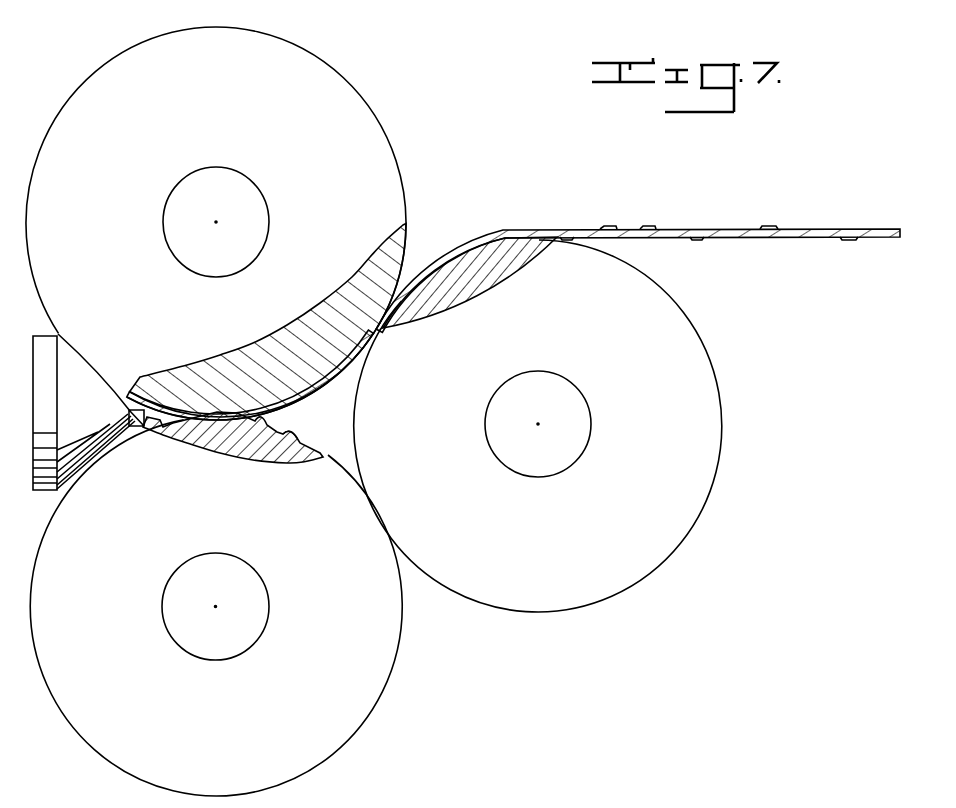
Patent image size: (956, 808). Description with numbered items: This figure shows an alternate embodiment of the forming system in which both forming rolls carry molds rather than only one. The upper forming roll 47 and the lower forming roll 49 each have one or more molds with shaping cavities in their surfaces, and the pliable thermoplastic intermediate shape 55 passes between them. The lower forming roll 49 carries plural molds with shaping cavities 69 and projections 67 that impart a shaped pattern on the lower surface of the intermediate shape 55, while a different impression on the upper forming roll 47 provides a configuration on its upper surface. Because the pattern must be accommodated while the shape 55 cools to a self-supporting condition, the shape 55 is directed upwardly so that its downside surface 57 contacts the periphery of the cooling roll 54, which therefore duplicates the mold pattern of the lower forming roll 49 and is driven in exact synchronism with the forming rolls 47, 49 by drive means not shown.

The upper forming roll 47 is at (343, 97).
The lower forming roll 49 is at (150, 770).
The cooling roll 54 is at (707, 412).
The intermediate shape 55 is at (692, 229).
The downside surface 57 is at (318, 392).
The projections 67 is at (258, 427).
The shaping cavities 69 is at (290, 435).